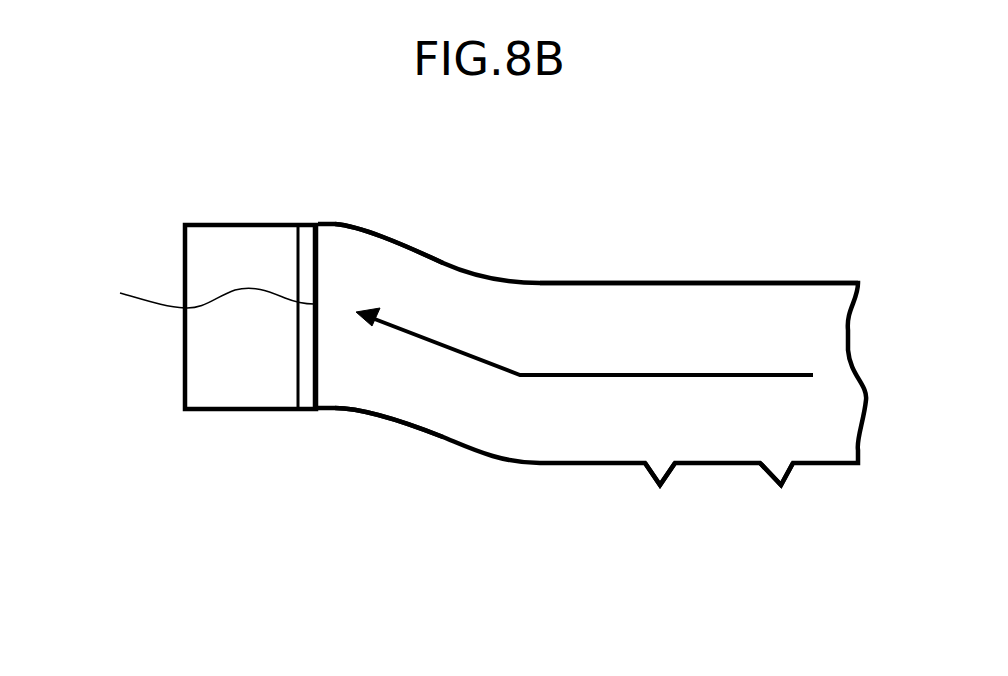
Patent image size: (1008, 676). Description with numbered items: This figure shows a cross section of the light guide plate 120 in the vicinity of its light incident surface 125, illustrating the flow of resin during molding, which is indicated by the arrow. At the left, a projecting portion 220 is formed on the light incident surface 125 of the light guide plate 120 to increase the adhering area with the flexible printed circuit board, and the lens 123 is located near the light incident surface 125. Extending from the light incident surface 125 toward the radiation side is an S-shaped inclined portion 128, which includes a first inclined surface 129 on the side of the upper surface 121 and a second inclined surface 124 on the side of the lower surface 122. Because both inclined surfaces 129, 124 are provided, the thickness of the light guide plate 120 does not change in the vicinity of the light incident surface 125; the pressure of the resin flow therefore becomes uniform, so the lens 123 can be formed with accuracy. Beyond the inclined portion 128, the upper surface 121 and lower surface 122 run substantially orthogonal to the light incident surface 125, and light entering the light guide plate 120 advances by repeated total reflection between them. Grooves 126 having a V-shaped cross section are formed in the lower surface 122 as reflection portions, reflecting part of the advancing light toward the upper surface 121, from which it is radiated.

The light guide plate 120 is at (573, 433).
The upper surface 121 is at (650, 283).
The lower surface 122 is at (697, 465).
The lens 123 is at (307, 412).
The second inclined surface 124 is at (403, 428).
The light incident surface 125 is at (185, 293).
The groove 126 is at (780, 470).
The inclined portion 128 is at (428, 293).
The first inclined surface 129 is at (405, 240).
The projecting portion 220 is at (240, 260).